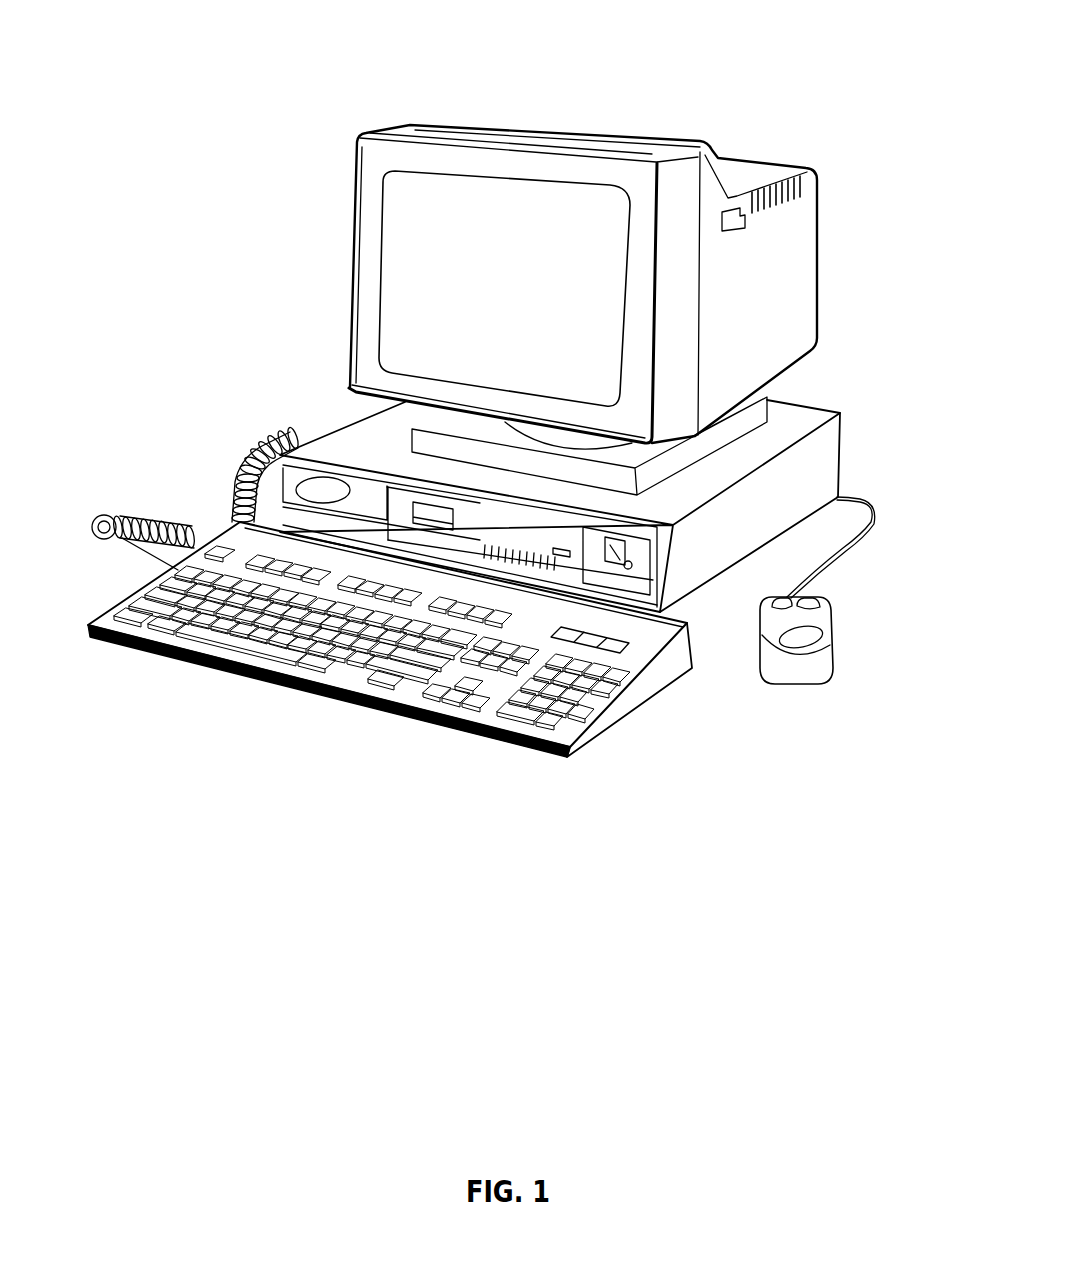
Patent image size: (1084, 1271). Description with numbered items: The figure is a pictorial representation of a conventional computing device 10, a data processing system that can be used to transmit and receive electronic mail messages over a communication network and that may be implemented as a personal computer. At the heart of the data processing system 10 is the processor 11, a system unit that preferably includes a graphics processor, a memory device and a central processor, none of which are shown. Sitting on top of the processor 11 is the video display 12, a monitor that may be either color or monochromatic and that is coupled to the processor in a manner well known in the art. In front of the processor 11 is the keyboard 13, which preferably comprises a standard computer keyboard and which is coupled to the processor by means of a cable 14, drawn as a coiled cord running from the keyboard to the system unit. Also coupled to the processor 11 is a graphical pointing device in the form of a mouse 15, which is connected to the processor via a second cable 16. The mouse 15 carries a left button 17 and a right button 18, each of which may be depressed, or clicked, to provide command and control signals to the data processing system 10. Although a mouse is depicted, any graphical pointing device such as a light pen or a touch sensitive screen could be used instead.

The computing device 10 is at (697, 98).
The processor 11 is at (828, 448).
The video display 12 is at (348, 335).
The keyboard 13 is at (383, 713).
The cable 14 is at (243, 457).
The mouse 15 is at (802, 665).
The cable 16 is at (842, 548).
The left button 17 is at (763, 607).
The right button 18 is at (818, 608).